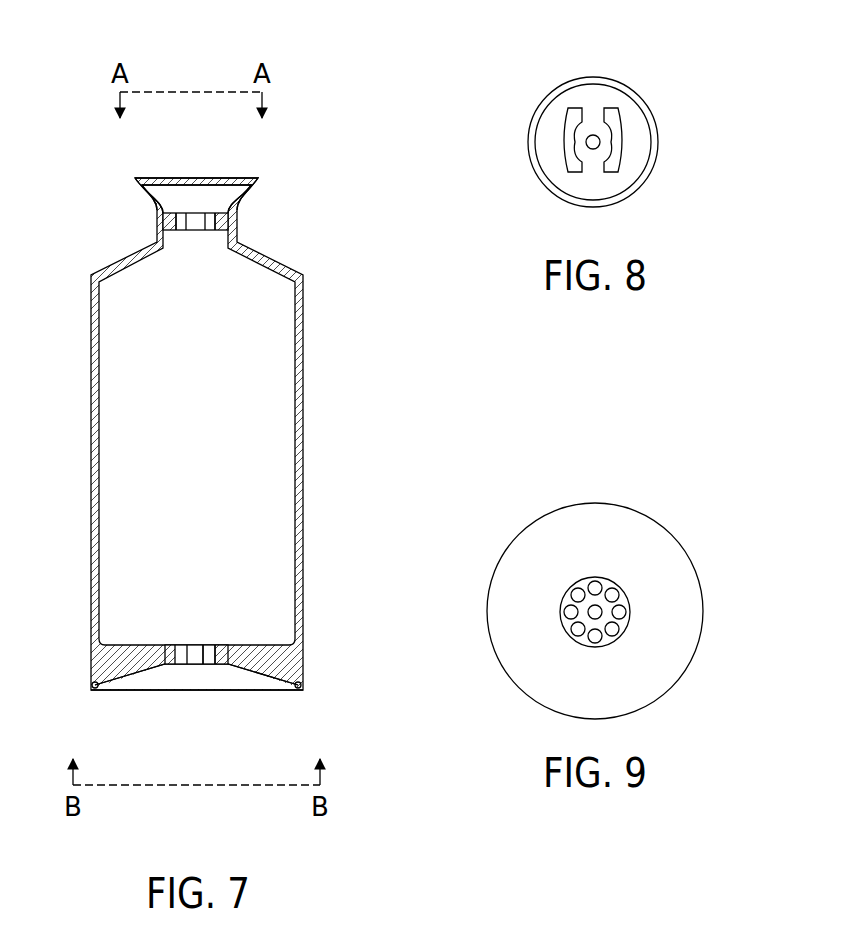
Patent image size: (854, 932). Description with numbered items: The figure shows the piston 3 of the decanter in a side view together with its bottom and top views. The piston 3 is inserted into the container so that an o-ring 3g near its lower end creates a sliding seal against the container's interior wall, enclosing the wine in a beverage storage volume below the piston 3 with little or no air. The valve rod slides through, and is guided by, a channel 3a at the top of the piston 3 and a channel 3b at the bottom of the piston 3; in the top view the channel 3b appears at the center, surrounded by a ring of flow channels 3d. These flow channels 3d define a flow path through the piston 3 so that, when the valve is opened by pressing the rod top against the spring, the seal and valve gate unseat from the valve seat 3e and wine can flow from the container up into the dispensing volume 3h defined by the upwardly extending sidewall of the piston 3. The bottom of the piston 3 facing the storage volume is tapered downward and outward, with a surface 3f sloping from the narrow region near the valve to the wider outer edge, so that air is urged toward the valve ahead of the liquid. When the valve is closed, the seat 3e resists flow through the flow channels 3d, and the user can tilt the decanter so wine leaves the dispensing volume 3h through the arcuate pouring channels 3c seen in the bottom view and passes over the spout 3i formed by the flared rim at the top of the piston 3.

In FIG. 7, the piston 3 is at (92, 425).
In FIG. 7, the channel 3a is at (197, 224).
In FIG. 8, the channel 3a is at (593, 150).
In FIG. 7, the channel 3b is at (200, 645).
In FIG. 9, the channel 3b is at (596, 616).
In FIG. 7, the pouring channels 3c is at (223, 213).
In FIG. 8, the pouring channels 3c is at (608, 113).
In FIG. 7, the flow channels 3d is at (220, 650).
In FIG. 9, the flow channels 3d is at (613, 595).
In FIG. 7, the valve seat 3e is at (167, 665).
In FIG. 7, the inclined bottom surface 3f is at (250, 676).
In FIG. 7, the o-ring 3g is at (300, 685).
In FIG. 9, the o-ring 3g is at (668, 534).
In FIG. 7, the dispensing volume 3h is at (180, 500).
In FIG. 7, the spout 3i is at (140, 187).
In FIG. 8, the spout 3i is at (593, 142).